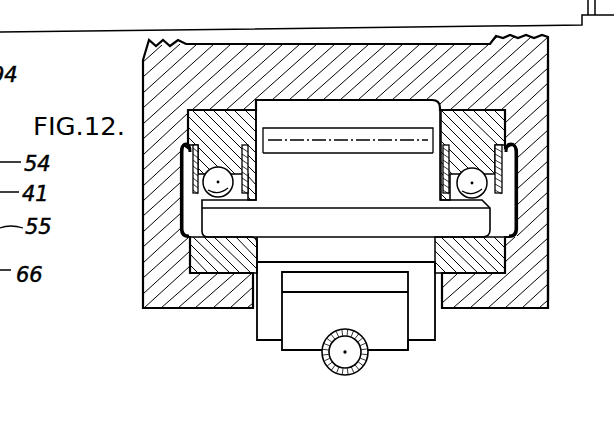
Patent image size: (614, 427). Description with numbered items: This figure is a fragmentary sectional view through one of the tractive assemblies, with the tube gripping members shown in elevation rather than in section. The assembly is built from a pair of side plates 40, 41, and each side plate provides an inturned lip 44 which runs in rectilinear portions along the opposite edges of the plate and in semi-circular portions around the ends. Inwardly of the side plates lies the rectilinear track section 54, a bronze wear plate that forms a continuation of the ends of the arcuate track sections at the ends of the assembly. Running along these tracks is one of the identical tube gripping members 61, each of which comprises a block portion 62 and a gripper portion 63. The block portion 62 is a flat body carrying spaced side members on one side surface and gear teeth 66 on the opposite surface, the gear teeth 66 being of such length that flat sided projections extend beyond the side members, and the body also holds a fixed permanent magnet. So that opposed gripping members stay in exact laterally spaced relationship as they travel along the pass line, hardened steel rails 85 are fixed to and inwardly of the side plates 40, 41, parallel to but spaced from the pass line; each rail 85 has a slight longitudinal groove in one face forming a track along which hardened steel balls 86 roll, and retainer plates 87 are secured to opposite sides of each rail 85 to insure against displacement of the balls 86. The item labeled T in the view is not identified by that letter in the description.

The side plate 40 is at (144, 264).
The side plate 41 is at (543, 188).
The inturned lip 44 is at (176, 301).
The rectilinear track section 54 is at (505, 254).
The tube gripping member 61 is at (190, 222).
The block portion 62 is at (443, 326).
The gripper portion 63 is at (412, 348).
The gear teeth 66 is at (366, 146).
The hardened steel rail 85 is at (186, 147).
The hardened steel ball 86 is at (233, 181).
The retainer plate 87 is at (505, 160).
The tool roller T is at (322, 356).